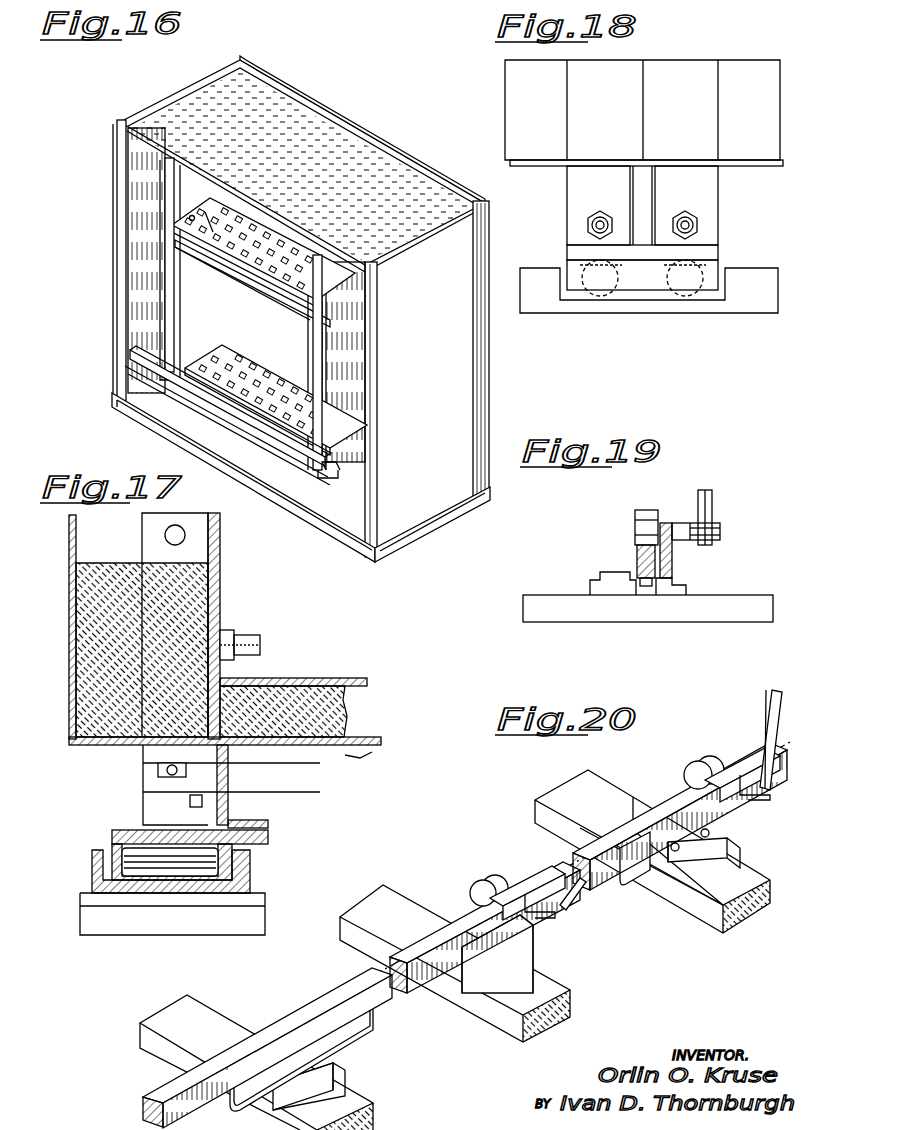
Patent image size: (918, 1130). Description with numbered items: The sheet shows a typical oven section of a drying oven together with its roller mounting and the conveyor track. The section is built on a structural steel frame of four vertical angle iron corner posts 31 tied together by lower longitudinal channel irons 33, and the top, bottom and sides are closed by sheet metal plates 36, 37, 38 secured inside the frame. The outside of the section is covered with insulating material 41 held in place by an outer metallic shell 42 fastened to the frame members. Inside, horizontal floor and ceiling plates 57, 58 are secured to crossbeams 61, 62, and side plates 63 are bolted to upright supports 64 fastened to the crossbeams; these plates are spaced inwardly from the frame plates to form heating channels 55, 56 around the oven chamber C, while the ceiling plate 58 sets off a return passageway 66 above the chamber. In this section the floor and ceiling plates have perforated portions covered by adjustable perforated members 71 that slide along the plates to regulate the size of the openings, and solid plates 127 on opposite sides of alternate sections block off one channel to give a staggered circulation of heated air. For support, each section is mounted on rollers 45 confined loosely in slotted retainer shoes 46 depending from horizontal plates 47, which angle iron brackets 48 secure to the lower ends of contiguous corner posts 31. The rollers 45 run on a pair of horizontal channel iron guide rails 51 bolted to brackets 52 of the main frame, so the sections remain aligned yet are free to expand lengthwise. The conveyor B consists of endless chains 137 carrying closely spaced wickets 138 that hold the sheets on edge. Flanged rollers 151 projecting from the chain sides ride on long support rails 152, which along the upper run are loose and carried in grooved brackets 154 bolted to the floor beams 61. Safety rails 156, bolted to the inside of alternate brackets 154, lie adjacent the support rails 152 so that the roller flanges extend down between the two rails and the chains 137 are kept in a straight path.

In FIG. 16, the corner post 31 is at (238, 60).
In FIG. 17, the corner post 31 is at (186, 518).
In FIG. 18, the corner post 31 is at (585, 193).
In FIG. 16, the lower longitudinal channel iron 33 is at (110, 394).
In FIG. 17, the lower longitudinal channel iron 33 is at (100, 744).
In FIG. 16, the top plate 36 is at (332, 137).
In FIG. 17, the bottom plate 37 is at (324, 678).
In FIG. 16, the side plate 38 is at (241, 314).
In FIG. 17, the side plate 38 is at (222, 538).
In FIG. 18, the side plate 38 is at (644, 113).
In FIG. 17, the insulating material 41 is at (100, 598).
In FIG. 16, the outer metallic shell 42 is at (110, 160).
In FIG. 17, the outer metallic shell 42 is at (72, 632).
In FIG. 17, the roller 45 is at (155, 868).
In FIG. 18, the roller 45 is at (675, 293).
In FIG. 17, the slotted retainer shoe 46 is at (115, 850).
In FIG. 18, the slotted retainer shoe 46 is at (642, 275).
In FIG. 17, the horizontal plate 47 is at (268, 838).
In FIG. 18, the horizontal plate 47 is at (712, 256).
In FIG. 17, the angle iron bracket 48 is at (255, 820).
In FIG. 17, the channel iron guide rail 51 is at (212, 905).
In FIG. 18, the channel iron guide rail 51 is at (745, 300).
In FIG. 20, the channel iron guide rail 51 is at (728, 842).
In FIG. 17, the bracket 52 is at (250, 916).
In FIG. 16, the heating channel 55 is at (148, 212).
In FIG. 16, the bottom heating channel 56 is at (213, 428).
In FIG. 16, the floor plate 57 is at (250, 345).
In FIG. 16, the ceiling plate 58 is at (302, 242).
In FIG. 16, the floor crossbeam 61 is at (188, 393).
In FIG. 19, the floor crossbeam 61 is at (748, 608).
In FIG. 20, the floor crossbeam 61 is at (742, 916).
In FIG. 16, the ceiling crossbeam 62 is at (212, 255).
In FIG. 16, the side plate 63 is at (196, 290).
In FIG. 16, the upright support 64 is at (172, 318).
In FIG. 16, the return passageway 66 is at (272, 232).
In FIG. 16, the adjustable perforated member 71 is at (250, 236).
In FIG. 16, the solid plate 127 is at (340, 480).
In FIG. 19, the endless chain 137 is at (676, 522).
In FIG. 20, the endless chain 137 is at (726, 760).
In FIG. 19, the wicket 138 is at (712, 502).
In FIG. 20, the wicket 138 is at (775, 700).
In FIG. 19, the flanged roller 151 is at (640, 522).
In FIG. 20, the flanged roller 151 is at (703, 762).
In FIG. 19, the support rail 152 is at (638, 556).
In FIG. 19, the rail bracket 154 is at (600, 585).
In FIG. 20, the rail bracket 154 is at (335, 1075).
In FIG. 19, the safety rail 156 is at (674, 556).
In FIG. 20, the safety rail 156 is at (650, 870).
In FIG. 16, the oven chamber C is at (186, 330).
In FIG. 19, the conveyor B is at (735, 540).